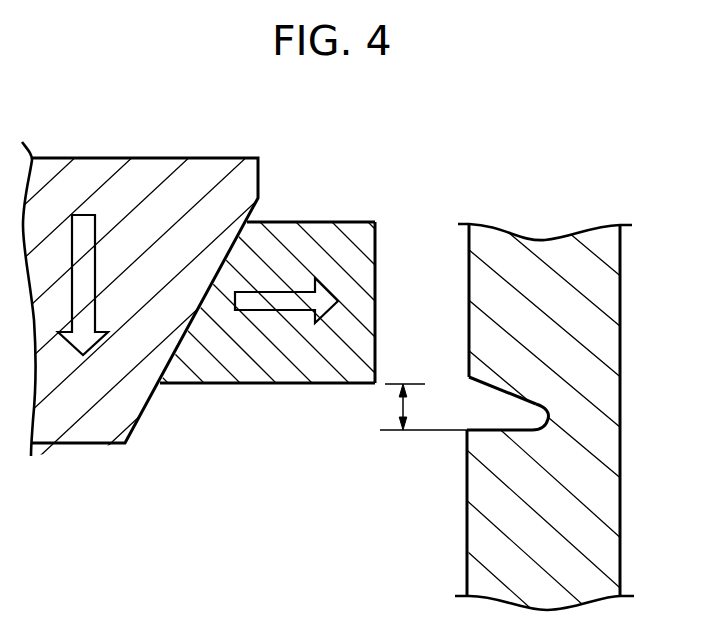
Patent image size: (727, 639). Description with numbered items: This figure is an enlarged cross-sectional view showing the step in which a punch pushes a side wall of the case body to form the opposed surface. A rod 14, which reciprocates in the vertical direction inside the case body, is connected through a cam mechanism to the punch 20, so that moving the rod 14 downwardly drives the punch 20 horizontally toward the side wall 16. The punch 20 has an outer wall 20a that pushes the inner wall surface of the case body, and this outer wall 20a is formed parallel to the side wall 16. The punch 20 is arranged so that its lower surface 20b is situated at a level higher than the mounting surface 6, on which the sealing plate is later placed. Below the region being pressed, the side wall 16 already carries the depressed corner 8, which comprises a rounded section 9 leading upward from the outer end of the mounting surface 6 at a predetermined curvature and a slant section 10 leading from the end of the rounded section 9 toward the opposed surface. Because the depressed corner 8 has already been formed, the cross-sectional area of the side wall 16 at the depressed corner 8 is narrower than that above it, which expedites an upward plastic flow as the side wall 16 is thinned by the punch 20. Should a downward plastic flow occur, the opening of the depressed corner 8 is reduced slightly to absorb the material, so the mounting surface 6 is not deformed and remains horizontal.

The rod 14 is at (157, 170).
The punch 20 is at (307, 238).
The outer wall 20a is at (373, 233).
The lower surface 20b is at (287, 386).
The side wall 16 is at (485, 540).
The slant section 10 is at (523, 398).
The rounded section 9 is at (550, 421).
The mounting surface 6 is at (490, 430).
The depressed corner 8 is at (461, 386).